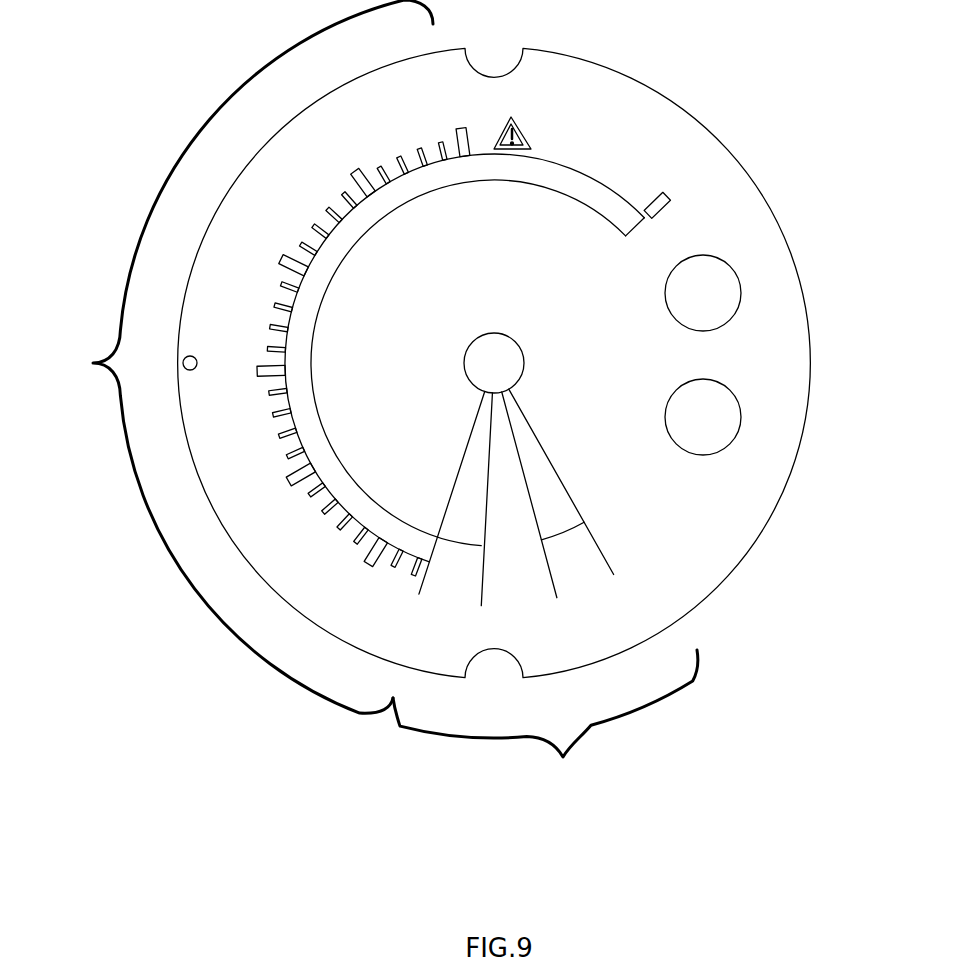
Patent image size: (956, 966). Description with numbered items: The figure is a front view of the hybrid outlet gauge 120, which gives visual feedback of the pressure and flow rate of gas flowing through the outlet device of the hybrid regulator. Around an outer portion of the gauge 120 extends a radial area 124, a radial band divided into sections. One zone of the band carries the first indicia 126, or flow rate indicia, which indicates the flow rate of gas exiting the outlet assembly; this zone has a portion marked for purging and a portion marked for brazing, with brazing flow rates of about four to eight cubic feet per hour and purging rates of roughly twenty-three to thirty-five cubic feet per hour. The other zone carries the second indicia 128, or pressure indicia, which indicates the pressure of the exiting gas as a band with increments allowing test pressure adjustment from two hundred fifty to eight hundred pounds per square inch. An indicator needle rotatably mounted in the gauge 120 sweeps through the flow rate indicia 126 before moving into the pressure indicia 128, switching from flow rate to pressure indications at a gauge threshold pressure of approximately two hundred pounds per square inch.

The hybrid outlet gauge 120 is at (742, 158).
The radial area 124 is at (414, 180).
The first indicia 126 is at (516, 612).
The second indicia 128 is at (300, 157).